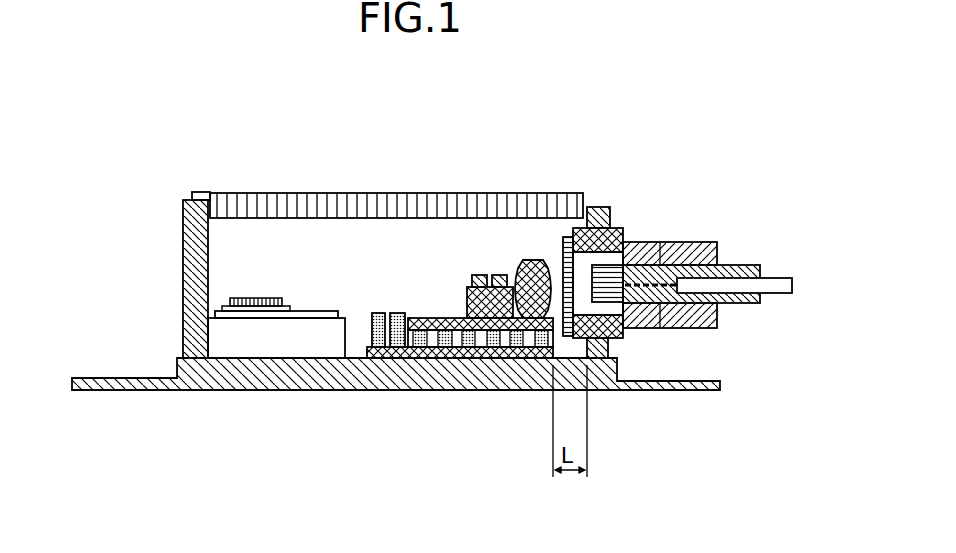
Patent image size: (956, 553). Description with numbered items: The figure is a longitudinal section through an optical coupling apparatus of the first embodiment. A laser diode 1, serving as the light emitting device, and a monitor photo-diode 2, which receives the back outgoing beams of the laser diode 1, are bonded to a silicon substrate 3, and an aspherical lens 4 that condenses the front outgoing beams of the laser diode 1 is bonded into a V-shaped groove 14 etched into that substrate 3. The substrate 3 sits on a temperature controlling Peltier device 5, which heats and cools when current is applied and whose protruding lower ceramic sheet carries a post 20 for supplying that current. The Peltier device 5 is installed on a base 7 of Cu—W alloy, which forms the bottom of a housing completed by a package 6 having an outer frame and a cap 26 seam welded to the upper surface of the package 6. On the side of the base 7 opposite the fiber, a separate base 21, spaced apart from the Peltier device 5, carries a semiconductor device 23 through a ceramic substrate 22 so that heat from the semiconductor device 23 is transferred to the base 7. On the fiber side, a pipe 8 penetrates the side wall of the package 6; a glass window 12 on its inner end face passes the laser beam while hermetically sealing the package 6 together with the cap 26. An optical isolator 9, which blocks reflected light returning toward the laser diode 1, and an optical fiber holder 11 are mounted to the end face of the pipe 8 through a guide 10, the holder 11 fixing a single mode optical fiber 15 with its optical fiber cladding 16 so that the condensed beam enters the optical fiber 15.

The laser diode 1 is at (500, 276).
The monitor photo-diode 2 is at (480, 276).
The substrate 3 is at (468, 290).
The aspherical lens 4 is at (533, 262).
The temperature controlling Peltier device 5 is at (423, 360).
The package 6 is at (183, 243).
The base 7 is at (212, 372).
The pipe 8 is at (599, 207).
The optical isolator 9 is at (607, 317).
The guide 10 is at (641, 242).
The optical fiber holder 11 is at (738, 265).
The glass window 12 is at (549, 360).
The V-shaped groove 14 is at (478, 345).
The optical fiber 15 is at (667, 243).
The optical fiber cladding 16 is at (740, 292).
The post 20 is at (372, 330).
The base 21 is at (263, 338).
The ceramic substrate 22 is at (312, 311).
The semiconductor device 23 is at (247, 298).
The cap 26 is at (358, 212).